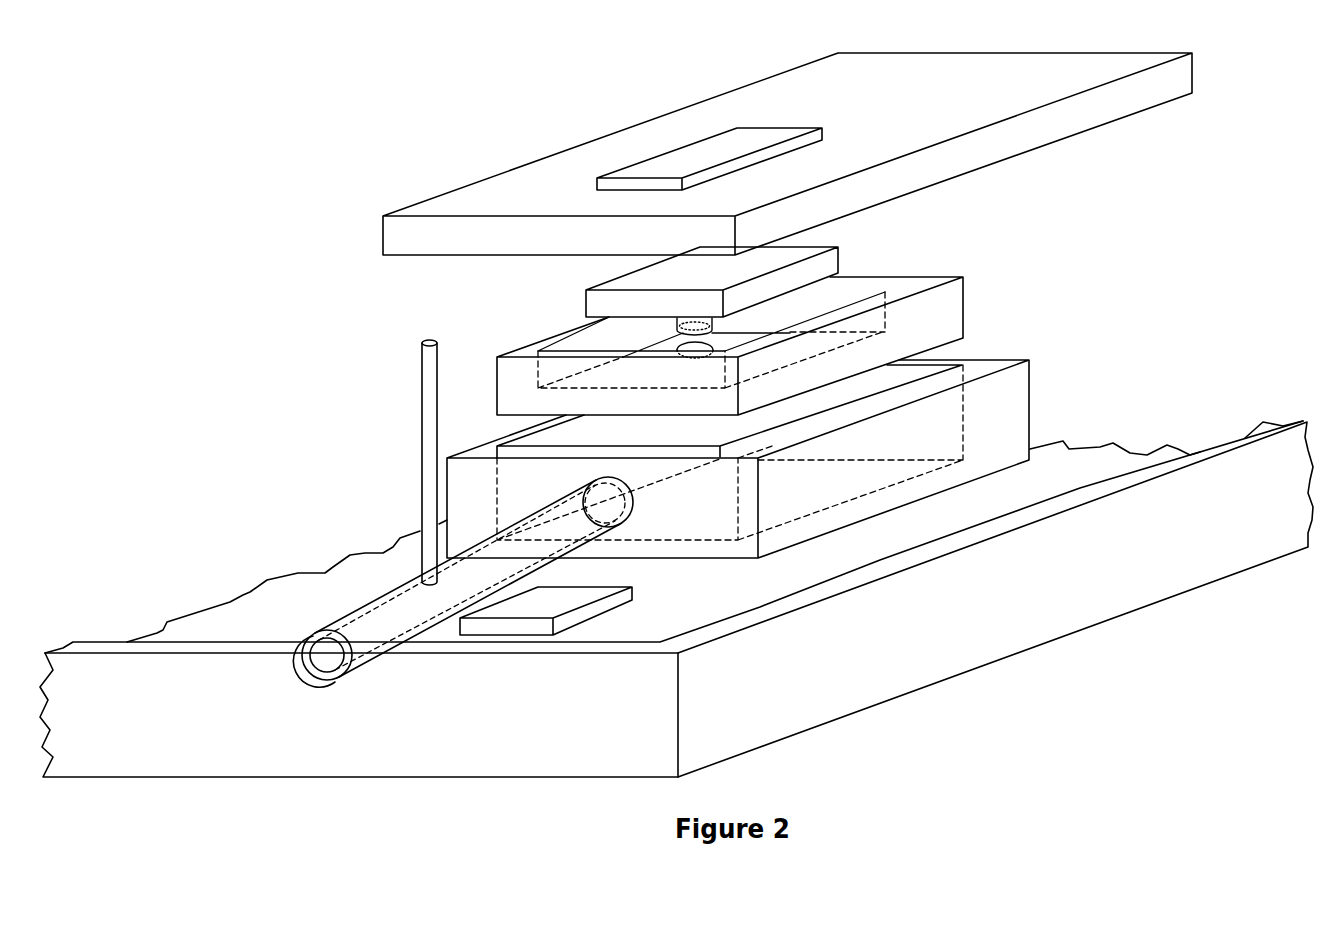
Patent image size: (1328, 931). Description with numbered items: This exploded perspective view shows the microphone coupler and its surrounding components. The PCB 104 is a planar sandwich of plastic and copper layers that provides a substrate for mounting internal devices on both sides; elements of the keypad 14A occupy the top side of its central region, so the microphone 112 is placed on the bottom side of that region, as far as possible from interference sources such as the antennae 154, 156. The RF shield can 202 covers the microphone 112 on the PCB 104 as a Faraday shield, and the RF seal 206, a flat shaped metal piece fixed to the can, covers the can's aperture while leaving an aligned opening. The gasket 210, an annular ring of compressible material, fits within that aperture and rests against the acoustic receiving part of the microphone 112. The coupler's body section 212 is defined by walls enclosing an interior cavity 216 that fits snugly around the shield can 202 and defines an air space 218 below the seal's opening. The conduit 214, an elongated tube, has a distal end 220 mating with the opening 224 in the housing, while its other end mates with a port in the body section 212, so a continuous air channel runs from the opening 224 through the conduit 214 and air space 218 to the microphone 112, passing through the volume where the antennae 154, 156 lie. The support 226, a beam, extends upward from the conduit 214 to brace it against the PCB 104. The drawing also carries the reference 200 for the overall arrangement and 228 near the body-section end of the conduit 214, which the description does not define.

The microphone assembly 200 is at (1180, 226).
The PCB 104 is at (787, 154).
The keypad 14A is at (753, 137).
The microphone 112 is at (828, 267).
The gasket 210 is at (676, 326).
The RF seal 206 is at (677, 350).
The RF shield can 202 is at (948, 320).
The interior cavity 216 is at (535, 437).
The body section 212 is at (1008, 431).
The air space 218 is at (730, 452).
The acoustic tube bore 228 is at (631, 512).
The conduit 214 is at (500, 565).
The distal end 220 is at (302, 677).
The opening 224 is at (327, 685).
The support 226 is at (422, 362).
The antenna 154 is at (602, 606).
The antenna 156 is at (567, 603).